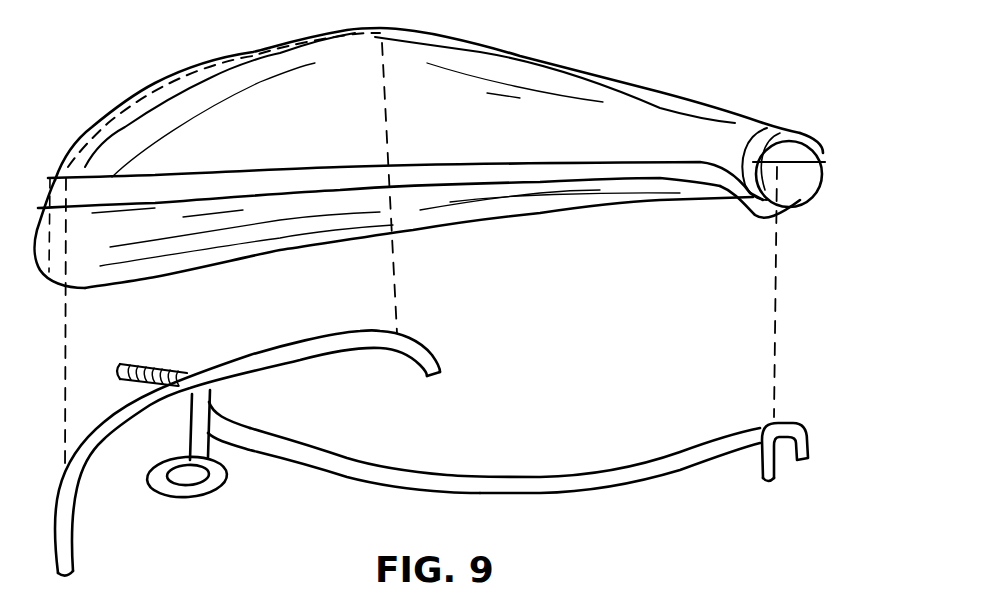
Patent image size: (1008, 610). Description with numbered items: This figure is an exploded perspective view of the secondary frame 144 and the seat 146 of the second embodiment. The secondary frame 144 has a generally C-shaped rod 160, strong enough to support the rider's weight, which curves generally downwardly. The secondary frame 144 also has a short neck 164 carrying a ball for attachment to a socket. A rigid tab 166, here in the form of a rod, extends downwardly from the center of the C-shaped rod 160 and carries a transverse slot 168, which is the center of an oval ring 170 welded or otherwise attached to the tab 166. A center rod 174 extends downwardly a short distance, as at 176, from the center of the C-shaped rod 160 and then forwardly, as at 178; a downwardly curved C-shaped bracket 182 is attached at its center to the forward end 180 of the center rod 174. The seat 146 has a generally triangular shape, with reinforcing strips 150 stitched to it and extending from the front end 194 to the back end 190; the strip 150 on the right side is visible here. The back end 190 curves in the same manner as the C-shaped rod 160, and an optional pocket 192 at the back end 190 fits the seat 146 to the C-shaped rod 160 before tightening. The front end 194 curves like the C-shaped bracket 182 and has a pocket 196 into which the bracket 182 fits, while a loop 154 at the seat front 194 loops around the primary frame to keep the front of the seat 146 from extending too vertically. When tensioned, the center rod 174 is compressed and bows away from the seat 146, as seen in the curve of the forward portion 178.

The secondary frame 144 is at (587, 494).
The seat 146 is at (453, 34).
The reinforcing strips 150 is at (510, 165).
The loop 154 is at (800, 207).
The C-shaped rod 160 is at (303, 340).
The short neck 164 is at (150, 362).
The rigid tab 166 is at (190, 430).
The slot 168 is at (187, 473).
The oval ring 170 is at (228, 478).
The center rod 174 is at (512, 475).
The downward portion of center rod 176 is at (220, 397).
The forward portion of center rod 178 is at (432, 472).
The forward end of center rod 180 is at (763, 423).
The C-shaped bracket 182 is at (762, 470).
The back end of seat 190 is at (188, 75).
The pocket at seat back end 192 is at (102, 110).
The front end of seat 194 is at (800, 142).
The seat front pocket 196 is at (757, 117).